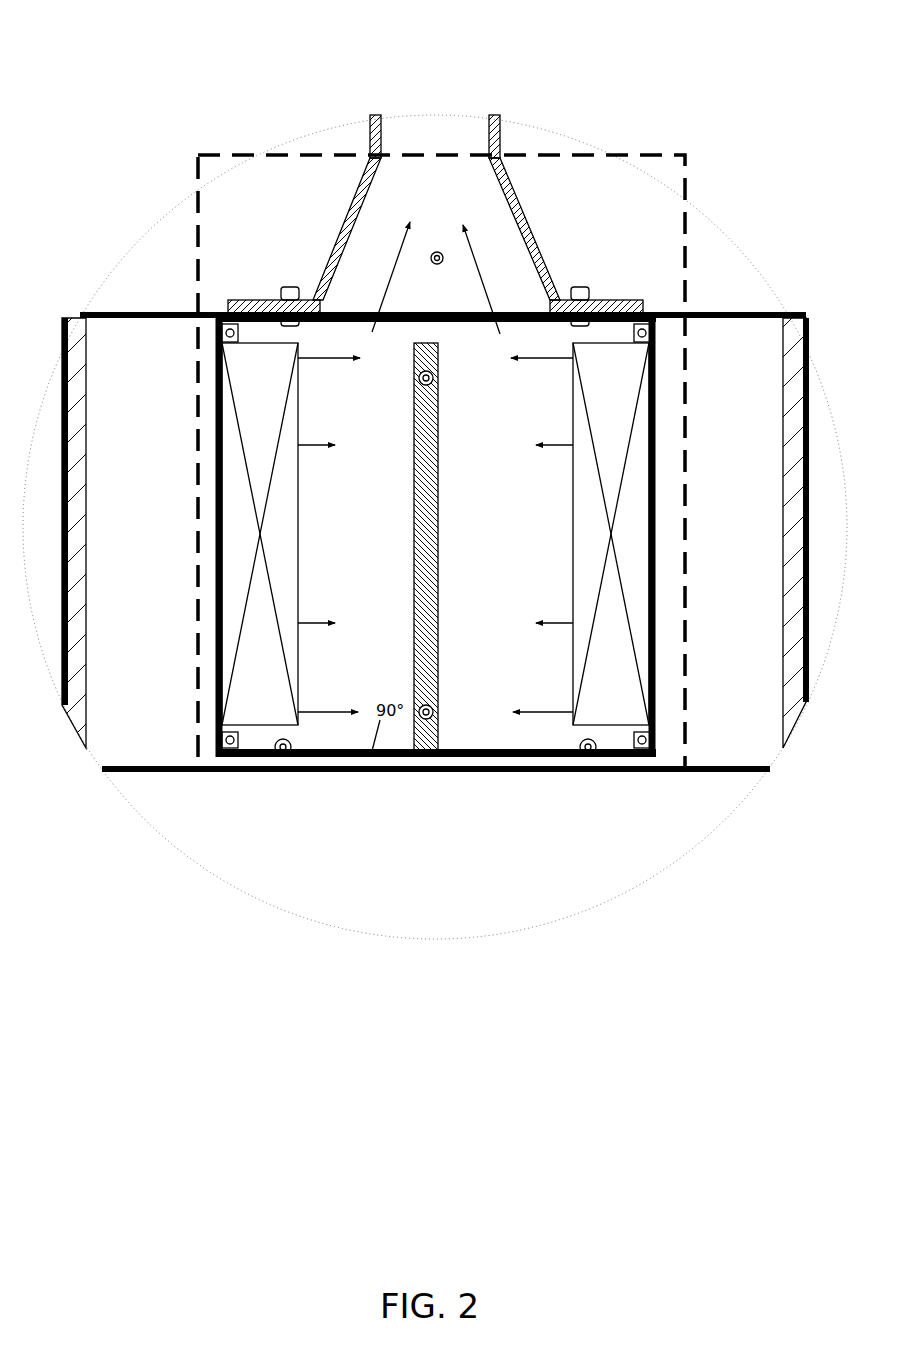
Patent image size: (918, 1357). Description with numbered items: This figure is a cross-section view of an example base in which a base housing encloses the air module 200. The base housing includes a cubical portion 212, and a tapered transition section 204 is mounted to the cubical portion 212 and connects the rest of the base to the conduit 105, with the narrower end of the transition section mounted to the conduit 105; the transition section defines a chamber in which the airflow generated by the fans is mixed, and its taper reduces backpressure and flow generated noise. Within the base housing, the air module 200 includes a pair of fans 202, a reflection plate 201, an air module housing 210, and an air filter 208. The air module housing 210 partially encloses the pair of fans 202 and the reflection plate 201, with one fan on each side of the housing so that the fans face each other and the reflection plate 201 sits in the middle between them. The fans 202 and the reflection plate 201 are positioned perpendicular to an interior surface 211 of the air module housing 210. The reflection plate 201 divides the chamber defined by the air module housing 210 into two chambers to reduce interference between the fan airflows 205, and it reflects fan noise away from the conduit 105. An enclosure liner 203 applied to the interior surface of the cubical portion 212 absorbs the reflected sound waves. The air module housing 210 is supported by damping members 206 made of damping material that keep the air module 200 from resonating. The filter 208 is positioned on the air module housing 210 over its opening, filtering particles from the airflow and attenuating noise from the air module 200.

The air module 200 is at (247, 157).
The conduit 105 is at (444, 160).
The reflection plate 201 is at (470, 548).
The pair of fans 202 is at (480, 534).
The enclosure liner 203 is at (90, 497).
The transition duct 204 is at (543, 245).
The airflow fastener 205 is at (437, 252).
The damping members 206 is at (438, 719).
The air filter 208 is at (365, 313).
The air module housing 210 is at (215, 372).
The interior surface 211 is at (535, 742).
The cubical portion 212 is at (122, 314).